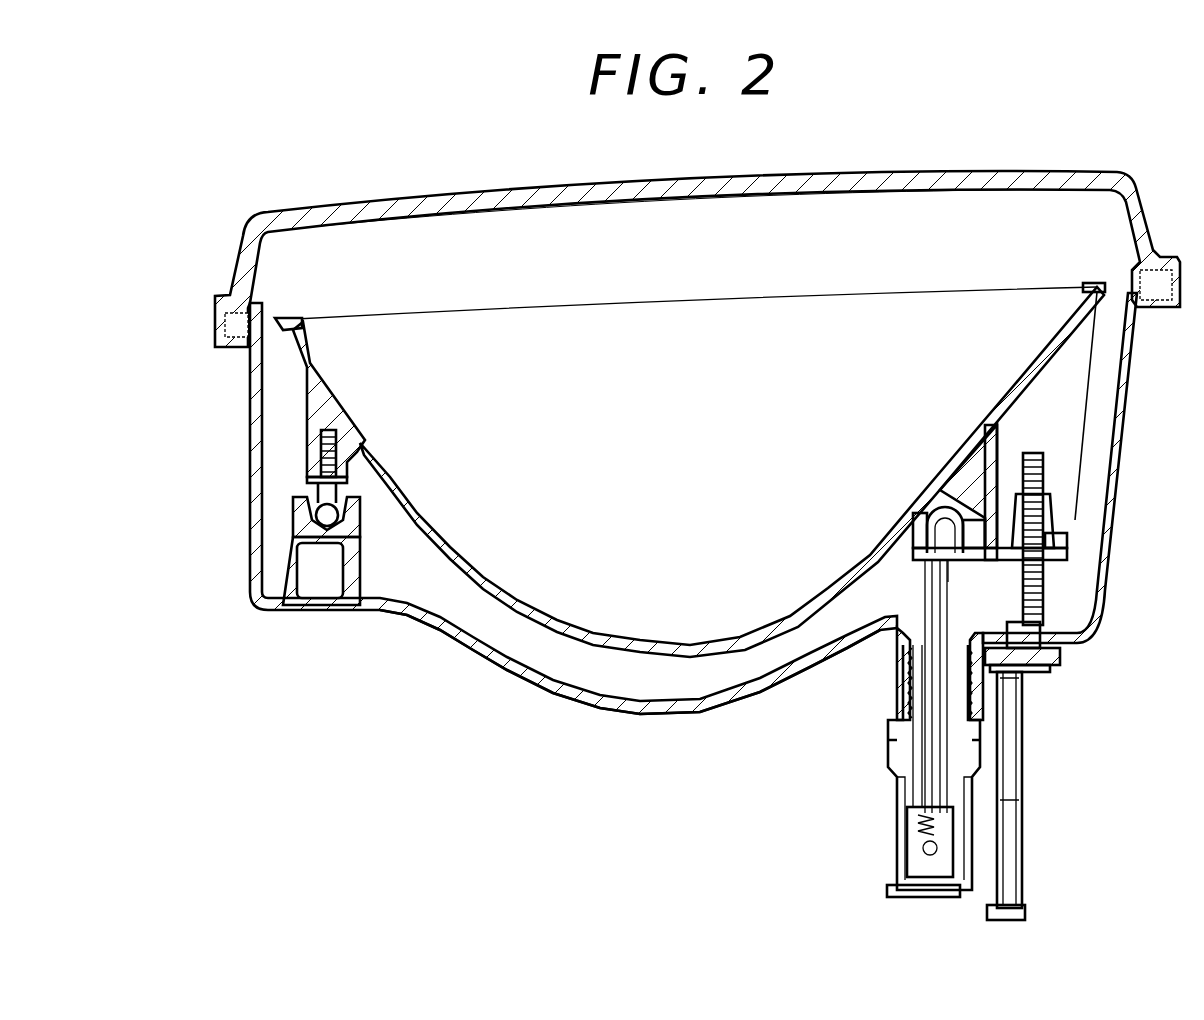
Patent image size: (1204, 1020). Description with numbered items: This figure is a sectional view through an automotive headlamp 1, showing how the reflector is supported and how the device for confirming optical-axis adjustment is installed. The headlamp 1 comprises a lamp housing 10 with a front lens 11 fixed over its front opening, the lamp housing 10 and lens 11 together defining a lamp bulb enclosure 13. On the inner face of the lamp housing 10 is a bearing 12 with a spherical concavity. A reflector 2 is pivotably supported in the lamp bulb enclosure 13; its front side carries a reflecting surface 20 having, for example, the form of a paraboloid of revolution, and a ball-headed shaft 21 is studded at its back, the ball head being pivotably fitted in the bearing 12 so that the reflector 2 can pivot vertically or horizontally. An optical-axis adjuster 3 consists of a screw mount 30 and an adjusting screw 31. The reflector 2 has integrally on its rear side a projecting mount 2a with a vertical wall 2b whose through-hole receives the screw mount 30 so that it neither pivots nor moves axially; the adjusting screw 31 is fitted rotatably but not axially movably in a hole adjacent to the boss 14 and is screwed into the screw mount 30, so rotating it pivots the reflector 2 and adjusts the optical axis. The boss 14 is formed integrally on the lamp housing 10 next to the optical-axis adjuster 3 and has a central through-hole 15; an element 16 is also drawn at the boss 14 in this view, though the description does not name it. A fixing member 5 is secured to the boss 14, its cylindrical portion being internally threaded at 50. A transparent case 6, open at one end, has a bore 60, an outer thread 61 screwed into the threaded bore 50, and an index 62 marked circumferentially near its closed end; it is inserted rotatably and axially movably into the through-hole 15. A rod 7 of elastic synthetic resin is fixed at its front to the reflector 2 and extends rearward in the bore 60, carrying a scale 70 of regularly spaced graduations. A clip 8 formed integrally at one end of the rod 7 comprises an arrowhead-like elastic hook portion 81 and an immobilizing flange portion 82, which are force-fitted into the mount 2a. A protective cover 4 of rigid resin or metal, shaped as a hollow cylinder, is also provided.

The automotive headlamp 1 is at (568, 703).
The reflector 2 is at (298, 378).
The projecting mount 2a is at (995, 527).
The vertical wall 2b is at (1062, 540).
The optical-axis adjuster 3 is at (1027, 828).
The protective cover 4 is at (886, 894).
The fixing member 5 is at (902, 668).
The case 6 is at (907, 765).
The rod 7 is at (1019, 781).
The clip 8 is at (960, 508).
The lamp housing 10 is at (490, 663).
The front lens 11 is at (800, 171).
The bearing 12 is at (298, 523).
The lamp bulb enclosure 13 is at (706, 248).
The boss 14 is at (980, 700).
The through-hole 15 is at (1060, 658).
The nut 16 is at (1047, 672).
The reflecting surface 20 is at (312, 440).
The ball-headed shaft 21 is at (318, 512).
The screw mount 30 is at (1052, 502).
The adjusting screw 31 is at (1020, 866).
The threaded bore 50 is at (892, 747).
The bore 60 is at (927, 842).
The thread 61 is at (905, 704).
The index 62 is at (913, 800).
The scale 70 is at (920, 823).
The elastic hook portion 81 is at (970, 522).
The immobilizing flange portion 82 is at (965, 565).